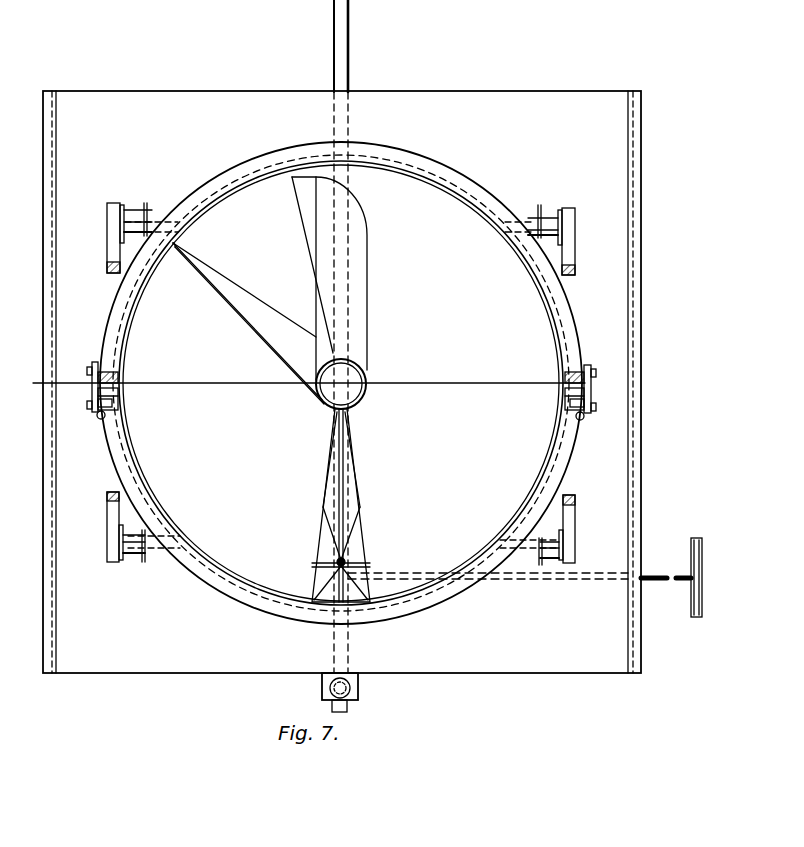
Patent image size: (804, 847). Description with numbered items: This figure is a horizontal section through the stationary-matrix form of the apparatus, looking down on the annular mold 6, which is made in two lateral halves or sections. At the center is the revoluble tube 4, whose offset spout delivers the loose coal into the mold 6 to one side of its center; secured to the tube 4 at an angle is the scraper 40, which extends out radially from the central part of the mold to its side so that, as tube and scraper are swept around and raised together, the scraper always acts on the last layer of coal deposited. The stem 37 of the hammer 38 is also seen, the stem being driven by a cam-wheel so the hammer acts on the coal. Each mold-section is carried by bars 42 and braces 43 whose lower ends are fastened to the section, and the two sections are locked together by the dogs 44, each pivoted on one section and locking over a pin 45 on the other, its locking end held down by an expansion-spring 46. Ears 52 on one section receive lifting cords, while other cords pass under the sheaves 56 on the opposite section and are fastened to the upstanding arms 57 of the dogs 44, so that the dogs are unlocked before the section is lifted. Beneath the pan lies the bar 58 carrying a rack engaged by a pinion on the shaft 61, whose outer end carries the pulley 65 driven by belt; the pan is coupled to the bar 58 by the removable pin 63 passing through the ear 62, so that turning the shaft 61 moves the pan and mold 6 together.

The revoluble tube 4 is at (366, 378).
The mold 6 is at (465, 191).
The stem 37 is at (347, 558).
The hammer 38 is at (353, 303).
The scraper 40 is at (255, 338).
The bars 42 is at (108, 384).
The braces 43 is at (107, 254).
The dogs 44 is at (596, 390).
The pin 45 is at (92, 373).
The expansion-spring 46 is at (100, 419).
The ears 52 is at (133, 205).
The sheaves 56 is at (132, 558).
The upstanding arms 57 is at (92, 402).
The bar 58 is at (350, 42).
The shaft 61 is at (651, 584).
The ear 62 is at (358, 684).
The removable pin 63 is at (330, 690).
The pulley 65 is at (703, 583).